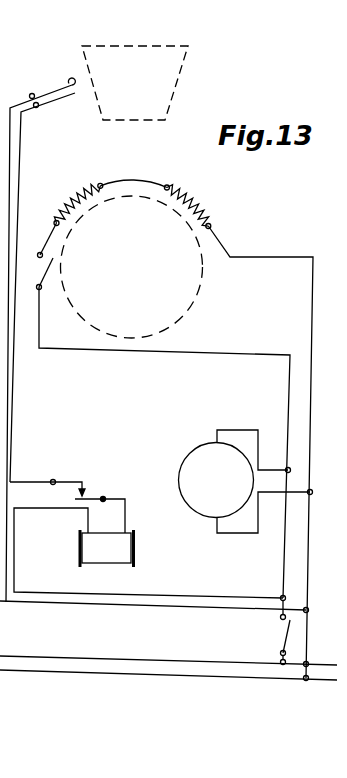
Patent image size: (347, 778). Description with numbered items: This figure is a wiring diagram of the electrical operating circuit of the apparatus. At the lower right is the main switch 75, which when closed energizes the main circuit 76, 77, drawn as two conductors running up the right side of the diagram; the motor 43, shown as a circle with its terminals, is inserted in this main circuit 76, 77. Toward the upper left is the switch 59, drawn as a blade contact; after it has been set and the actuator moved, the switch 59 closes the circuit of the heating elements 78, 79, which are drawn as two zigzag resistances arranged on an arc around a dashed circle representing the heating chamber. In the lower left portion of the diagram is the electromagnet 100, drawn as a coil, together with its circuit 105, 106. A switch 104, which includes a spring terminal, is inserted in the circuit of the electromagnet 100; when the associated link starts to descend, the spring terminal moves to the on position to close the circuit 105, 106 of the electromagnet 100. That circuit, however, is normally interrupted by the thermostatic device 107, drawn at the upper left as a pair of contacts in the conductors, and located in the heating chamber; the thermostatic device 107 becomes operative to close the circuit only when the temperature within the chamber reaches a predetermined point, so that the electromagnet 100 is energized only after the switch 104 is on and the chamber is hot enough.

The thermostatic device 107 is at (45, 92).
The heating element 78 is at (80, 197).
The heating element 79 is at (186, 193).
The switch 59 is at (52, 270).
The main circuit 76 is at (287, 383).
The main circuit 77 is at (309, 402).
The motor 43 is at (205, 503).
The electromagnet circuit 106 is at (5, 467).
The switch 104 is at (62, 481).
The electromagnet circuit 105 is at (15, 553).
The electromagnet 100 is at (80, 564).
The main switch 75 is at (287, 632).